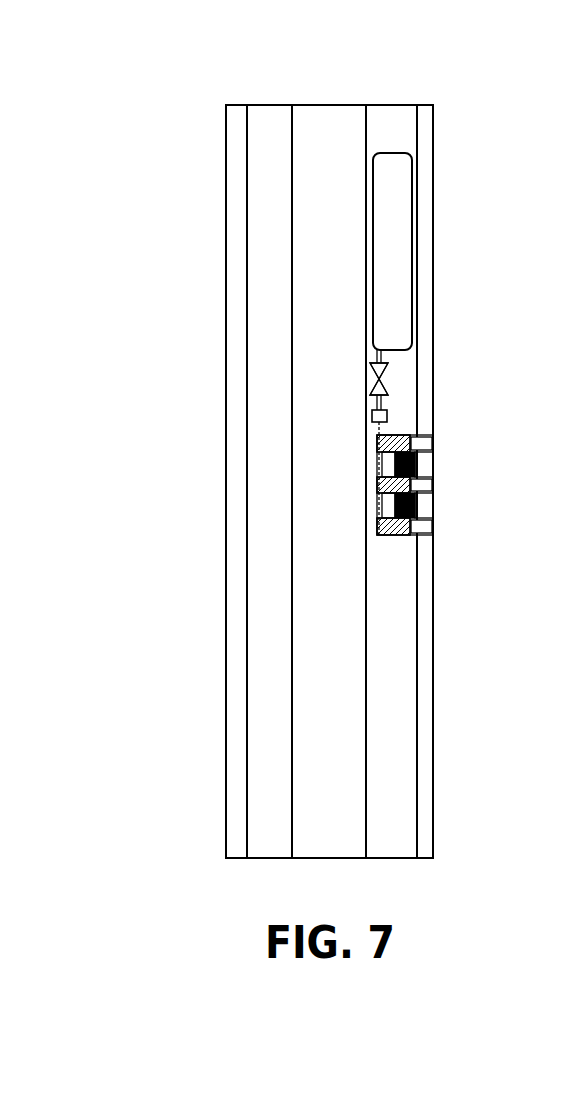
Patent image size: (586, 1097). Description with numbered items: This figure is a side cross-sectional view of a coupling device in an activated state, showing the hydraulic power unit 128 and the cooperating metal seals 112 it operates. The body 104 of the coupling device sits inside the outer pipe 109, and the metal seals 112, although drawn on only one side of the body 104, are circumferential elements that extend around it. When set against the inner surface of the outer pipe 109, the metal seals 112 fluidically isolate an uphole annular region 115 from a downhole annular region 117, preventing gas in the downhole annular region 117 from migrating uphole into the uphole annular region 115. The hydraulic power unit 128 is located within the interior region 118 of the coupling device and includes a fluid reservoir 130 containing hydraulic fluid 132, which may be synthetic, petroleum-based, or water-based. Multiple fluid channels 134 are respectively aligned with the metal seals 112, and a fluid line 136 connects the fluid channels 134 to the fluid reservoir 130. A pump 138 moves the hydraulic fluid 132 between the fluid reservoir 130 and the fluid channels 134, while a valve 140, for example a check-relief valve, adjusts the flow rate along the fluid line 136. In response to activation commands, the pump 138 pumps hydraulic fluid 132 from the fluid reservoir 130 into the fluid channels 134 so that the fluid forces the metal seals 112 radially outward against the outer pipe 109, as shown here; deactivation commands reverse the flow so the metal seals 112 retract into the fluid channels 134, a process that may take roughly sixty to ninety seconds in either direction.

The body 104 is at (240, 362).
The outer pipe 109 is at (226, 135).
The metal seals 112 is at (433, 485).
The uphole annular region 115 is at (428, 125).
The downhole annular region 117 is at (427, 738).
The interior region 118 is at (260, 502).
The hydraulic power unit 128 is at (504, 224).
The fluid reservoir 130 is at (390, 152).
The hydraulic fluid 132 is at (393, 485).
The fluid channels 134 is at (377, 443).
The fluid line 136 is at (390, 402).
The pump 138 is at (363, 381).
The valve 140 is at (363, 417).